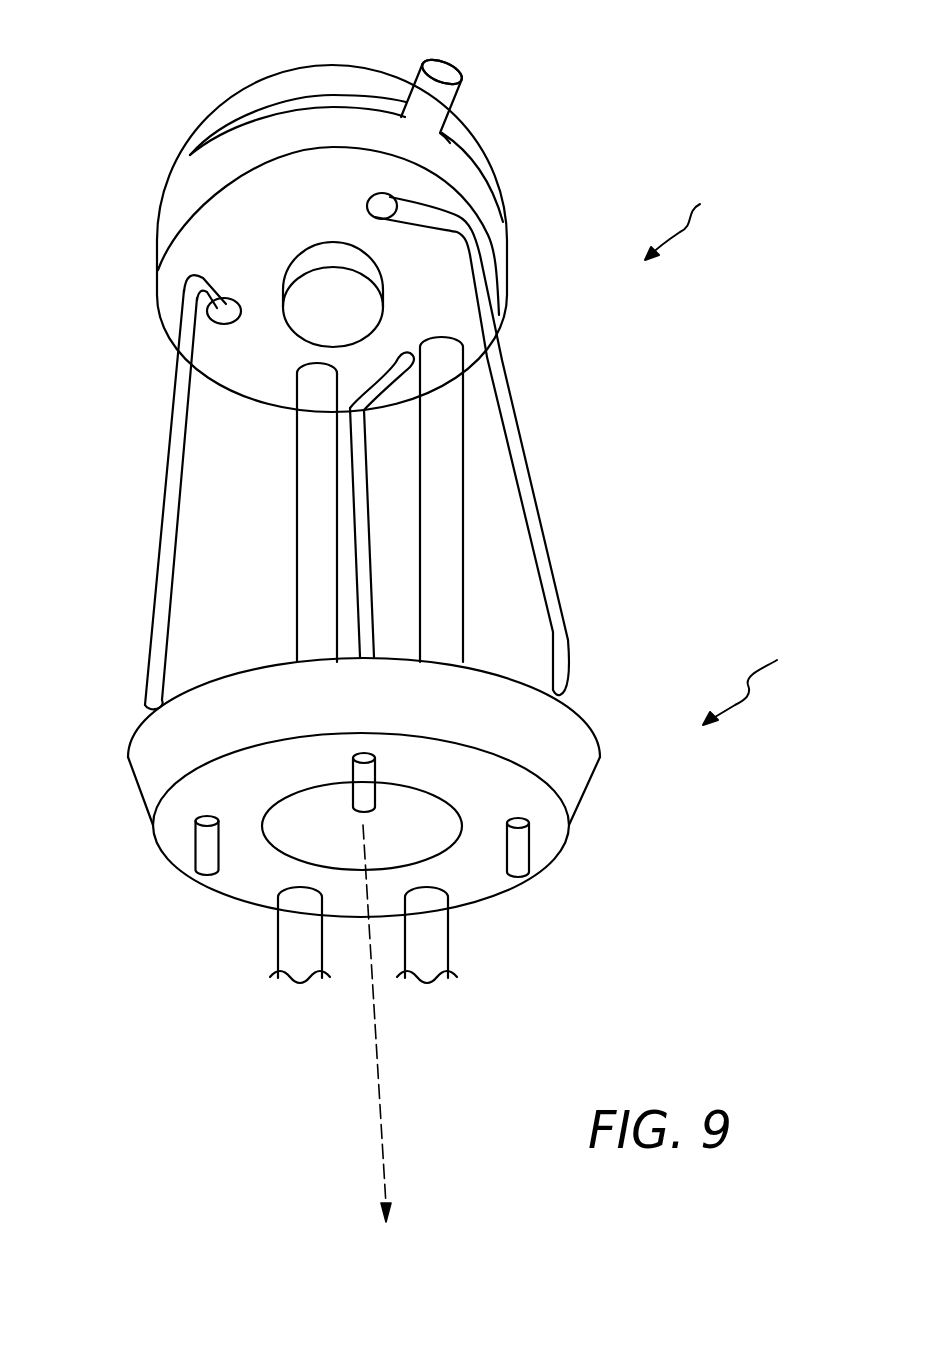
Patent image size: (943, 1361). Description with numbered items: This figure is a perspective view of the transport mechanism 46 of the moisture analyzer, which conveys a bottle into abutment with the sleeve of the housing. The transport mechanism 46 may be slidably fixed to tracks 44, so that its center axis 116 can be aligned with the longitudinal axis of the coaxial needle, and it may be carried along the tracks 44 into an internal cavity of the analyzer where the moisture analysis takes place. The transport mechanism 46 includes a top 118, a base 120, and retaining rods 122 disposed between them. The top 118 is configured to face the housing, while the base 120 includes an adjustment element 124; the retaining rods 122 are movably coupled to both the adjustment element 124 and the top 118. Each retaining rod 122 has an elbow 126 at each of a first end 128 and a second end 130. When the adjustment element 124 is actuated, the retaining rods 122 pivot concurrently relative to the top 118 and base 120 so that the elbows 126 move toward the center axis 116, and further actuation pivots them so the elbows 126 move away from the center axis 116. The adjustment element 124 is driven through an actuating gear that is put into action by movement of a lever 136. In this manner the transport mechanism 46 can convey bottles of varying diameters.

The tracks 44 is at (465, 510).
The transport mechanism 46 is at (782, 964).
The center axis 116 is at (385, 1115).
The top 118 is at (537, 831).
The base 120 is at (473, 184).
The retaining rods 122 is at (510, 393).
The adjustment element 124 is at (446, 70).
The elbow 126 is at (193, 270).
The first end 128 is at (768, 684).
The second end 130 is at (701, 224).
The lever 136 is at (433, 105).